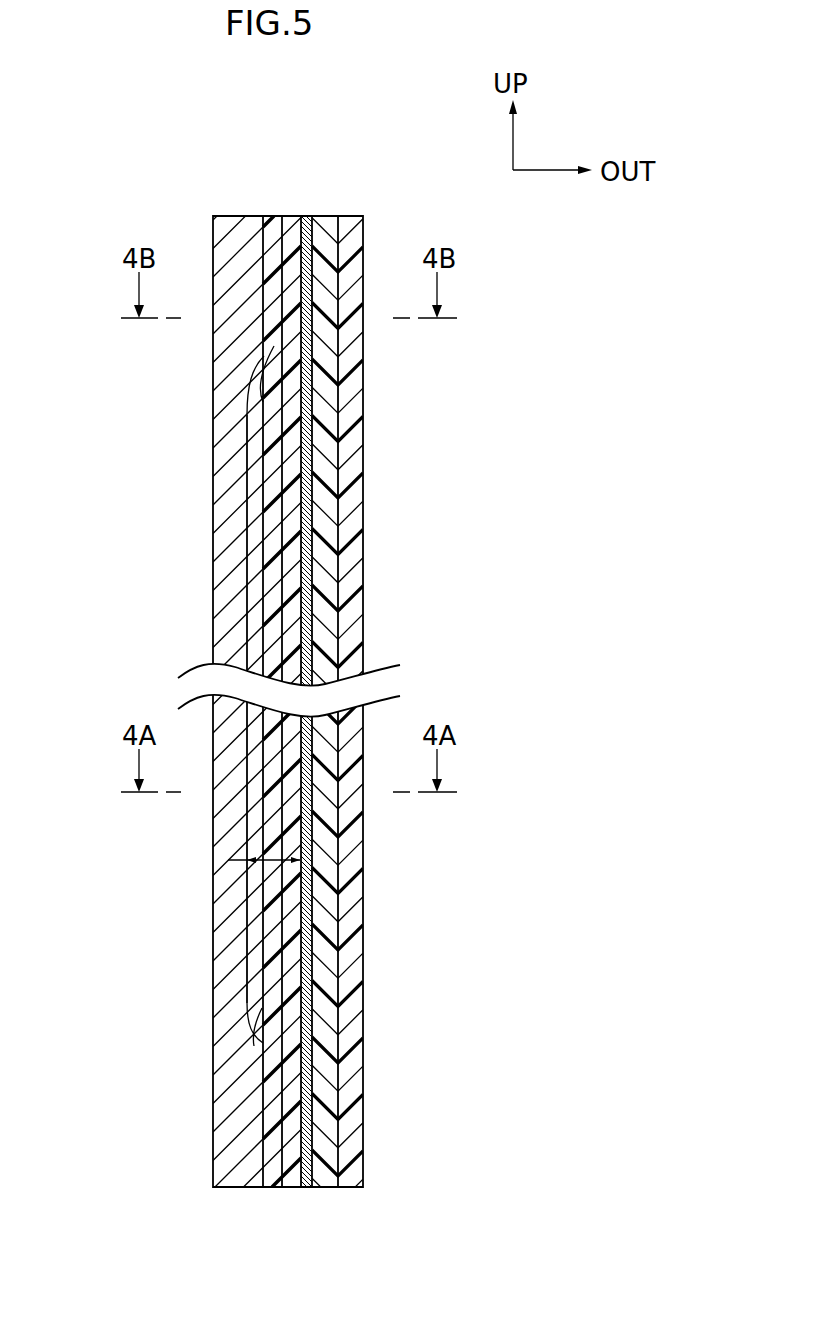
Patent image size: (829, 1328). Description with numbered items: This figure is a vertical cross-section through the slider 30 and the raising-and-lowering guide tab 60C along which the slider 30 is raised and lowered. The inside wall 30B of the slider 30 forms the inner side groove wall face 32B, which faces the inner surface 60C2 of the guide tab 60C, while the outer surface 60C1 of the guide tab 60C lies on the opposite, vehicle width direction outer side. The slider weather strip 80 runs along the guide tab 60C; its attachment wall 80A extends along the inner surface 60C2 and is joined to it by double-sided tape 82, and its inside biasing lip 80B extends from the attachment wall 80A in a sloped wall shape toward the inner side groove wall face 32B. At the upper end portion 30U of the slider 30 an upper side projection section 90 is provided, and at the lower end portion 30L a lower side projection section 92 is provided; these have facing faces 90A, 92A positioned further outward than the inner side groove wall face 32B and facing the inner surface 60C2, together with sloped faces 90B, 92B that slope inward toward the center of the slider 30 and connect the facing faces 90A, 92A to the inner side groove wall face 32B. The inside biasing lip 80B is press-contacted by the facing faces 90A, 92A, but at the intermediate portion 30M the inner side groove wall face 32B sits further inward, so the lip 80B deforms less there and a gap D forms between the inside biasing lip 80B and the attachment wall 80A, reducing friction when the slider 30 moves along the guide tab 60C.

The slider 30 is at (201, 145).
The upper side projection section 90 is at (233, 320).
The facing face 90A is at (278, 267).
The sloped face 90B is at (247, 406).
The upper end portion 30U is at (213, 351).
The intermediate portion 30M is at (213, 608).
The lower end portion 30L is at (213, 1071).
The inside wall 30B is at (228, 563).
The inner side groove wall face 32B is at (247, 640).
The raising-and-lowering guide tab 60C is at (330, 422).
The outer surface 60C1 is at (340, 393).
The inner surface 60C2 is at (262, 485).
The slider weather strip 80 is at (458, 498).
The attachment wall 80A is at (292, 515).
The inside biasing lip 80B is at (257, 579).
The double-sided tape 82 is at (305, 626).
The lower side projection section 92 is at (232, 1112).
The facing face 92A is at (272, 1127).
The sloped face 92B is at (247, 1003).
The gap D is at (272, 857).